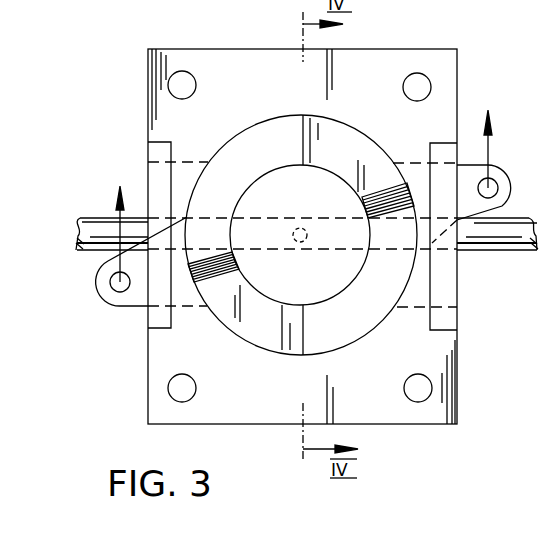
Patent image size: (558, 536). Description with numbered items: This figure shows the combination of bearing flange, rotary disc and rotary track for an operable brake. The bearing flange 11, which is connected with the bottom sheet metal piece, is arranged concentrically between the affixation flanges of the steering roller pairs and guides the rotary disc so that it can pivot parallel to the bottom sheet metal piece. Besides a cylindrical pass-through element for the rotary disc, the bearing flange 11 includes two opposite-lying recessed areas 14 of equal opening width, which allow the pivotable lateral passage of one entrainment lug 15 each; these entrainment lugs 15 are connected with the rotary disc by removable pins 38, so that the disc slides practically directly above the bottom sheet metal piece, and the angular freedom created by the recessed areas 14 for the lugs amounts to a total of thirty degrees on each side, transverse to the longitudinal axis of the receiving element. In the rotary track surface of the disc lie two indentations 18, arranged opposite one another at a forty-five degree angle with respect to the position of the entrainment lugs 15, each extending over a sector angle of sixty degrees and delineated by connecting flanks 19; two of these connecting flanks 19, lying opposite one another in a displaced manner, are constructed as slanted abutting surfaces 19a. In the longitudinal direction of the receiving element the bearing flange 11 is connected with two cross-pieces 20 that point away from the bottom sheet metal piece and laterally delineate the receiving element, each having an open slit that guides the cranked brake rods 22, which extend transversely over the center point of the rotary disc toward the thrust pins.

The bearing flange 11 is at (255, 90).
The recessed area 14 is at (428, 306).
The entrainment lug 15 is at (110, 298).
The indentation 18 is at (338, 143).
The connecting flank 19 is at (373, 192).
The slanted abutting surface 19a is at (408, 185).
The cross-piece 20 is at (448, 322).
The brake rod 22 is at (82, 218).
The removable pin 38 is at (120, 280).